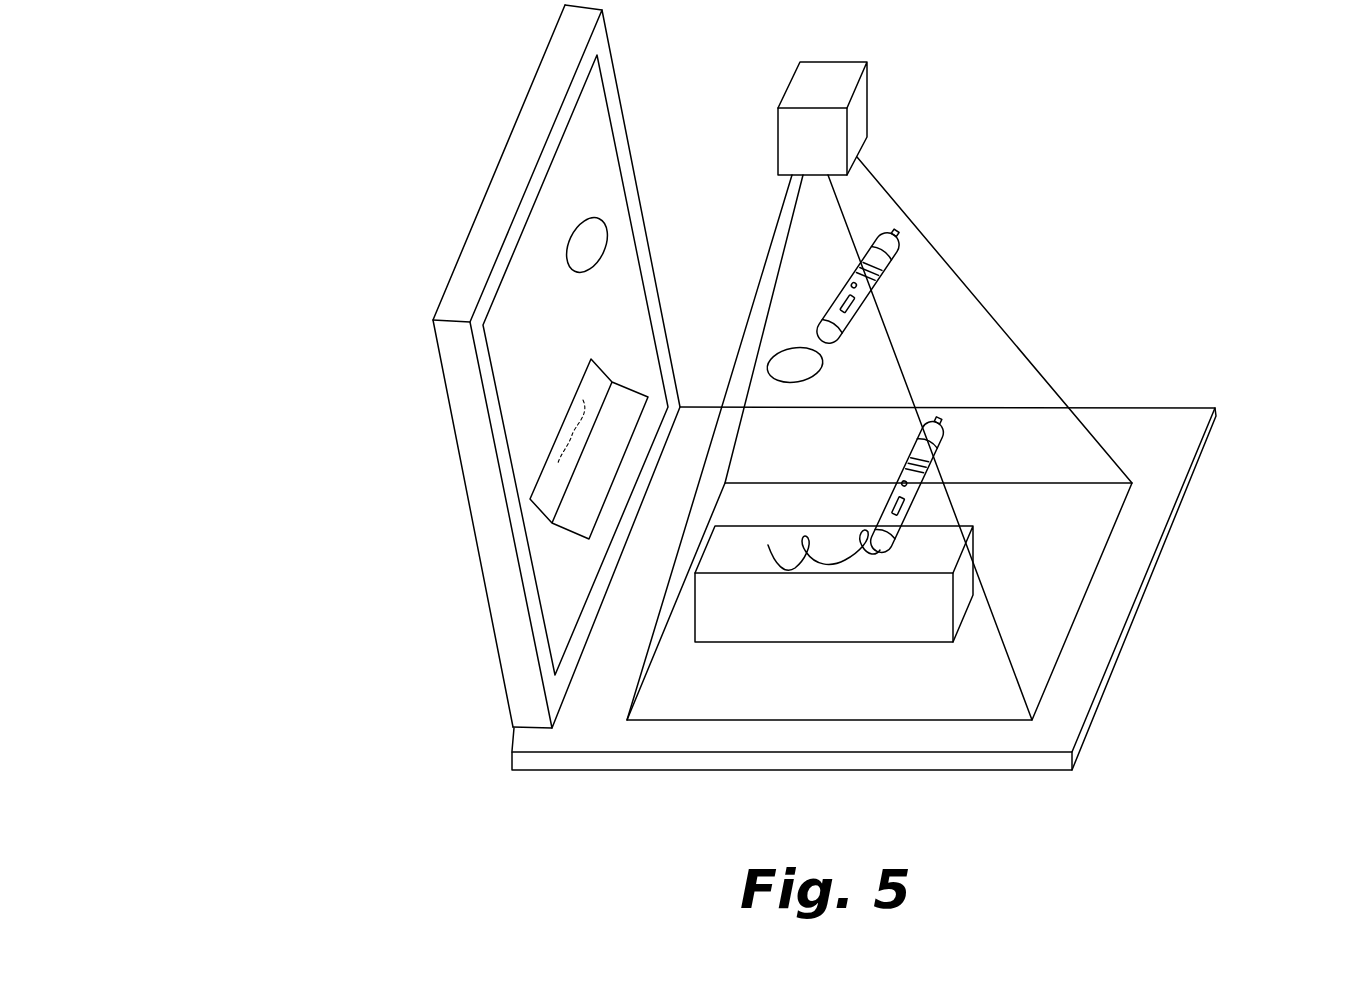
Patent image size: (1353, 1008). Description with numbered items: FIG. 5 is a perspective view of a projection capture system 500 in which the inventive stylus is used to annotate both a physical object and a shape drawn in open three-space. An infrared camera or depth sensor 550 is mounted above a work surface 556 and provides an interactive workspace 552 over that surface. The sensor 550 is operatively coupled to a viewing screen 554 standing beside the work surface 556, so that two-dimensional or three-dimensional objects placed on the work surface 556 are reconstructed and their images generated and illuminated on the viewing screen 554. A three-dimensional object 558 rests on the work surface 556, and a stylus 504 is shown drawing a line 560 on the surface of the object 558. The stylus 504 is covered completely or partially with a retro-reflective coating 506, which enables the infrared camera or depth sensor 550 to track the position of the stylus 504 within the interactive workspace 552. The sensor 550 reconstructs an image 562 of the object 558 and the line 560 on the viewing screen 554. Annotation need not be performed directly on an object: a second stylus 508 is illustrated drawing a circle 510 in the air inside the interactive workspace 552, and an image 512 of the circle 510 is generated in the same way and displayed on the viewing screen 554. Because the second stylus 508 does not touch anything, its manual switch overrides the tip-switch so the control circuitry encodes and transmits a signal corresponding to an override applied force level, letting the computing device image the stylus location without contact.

The projection capture system 500 is at (240, 98).
The stylus 504 is at (968, 447).
The retro-reflective coating 506 is at (960, 480).
The second stylus 508 is at (892, 270).
The circle 510 is at (818, 368).
The image of the circle 512 is at (583, 243).
The infrared camera or depth sensor 550 is at (840, 83).
The interactive workspace 552 is at (985, 279).
The viewing screen 554 is at (513, 376).
The work surface 556 is at (1159, 452).
The three-dimensional object 558 is at (958, 590).
The line 560 is at (838, 568).
The image of the object 562 is at (567, 511).